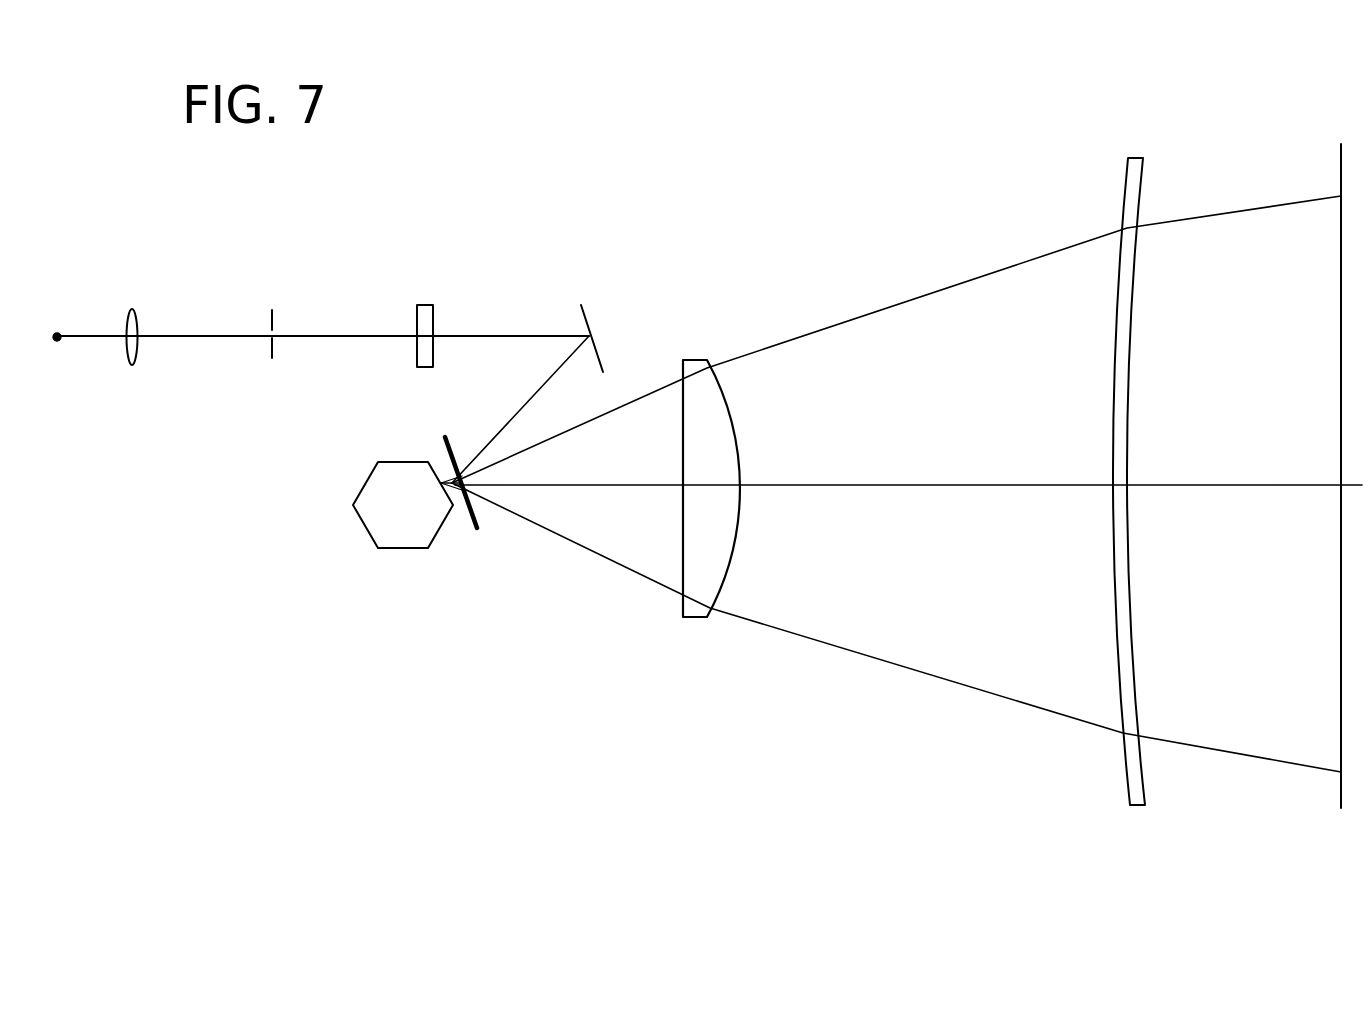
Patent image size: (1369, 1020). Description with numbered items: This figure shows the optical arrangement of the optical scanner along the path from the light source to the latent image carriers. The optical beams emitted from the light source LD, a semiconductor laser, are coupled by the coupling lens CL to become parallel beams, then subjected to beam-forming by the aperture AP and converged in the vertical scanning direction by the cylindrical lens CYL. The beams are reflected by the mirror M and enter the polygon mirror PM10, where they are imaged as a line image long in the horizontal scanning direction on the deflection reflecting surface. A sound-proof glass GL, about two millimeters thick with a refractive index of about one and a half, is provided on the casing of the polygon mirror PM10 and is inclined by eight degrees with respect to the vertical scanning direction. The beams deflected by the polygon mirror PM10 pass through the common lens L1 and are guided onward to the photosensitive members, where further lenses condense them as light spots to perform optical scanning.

The light source LD is at (57, 334).
The coupling lens CL is at (133, 325).
The aperture AP is at (290, 297).
The cylindrical lens CYL is at (430, 318).
The mirror M is at (585, 314).
The polygon mirror PM10 is at (398, 540).
The sound-proof glass GL is at (477, 528).
The common lens L1 is at (732, 468).